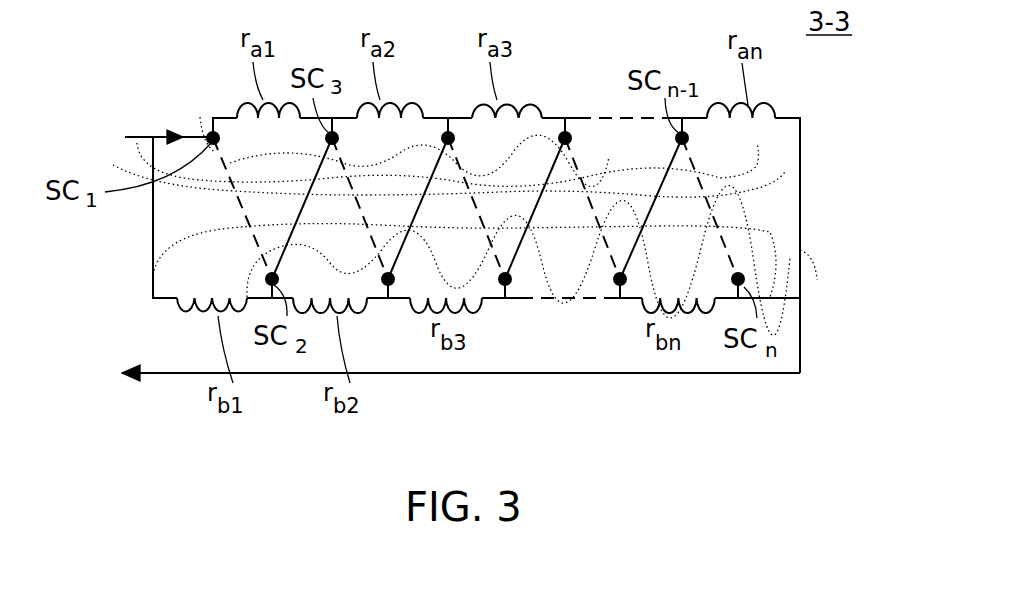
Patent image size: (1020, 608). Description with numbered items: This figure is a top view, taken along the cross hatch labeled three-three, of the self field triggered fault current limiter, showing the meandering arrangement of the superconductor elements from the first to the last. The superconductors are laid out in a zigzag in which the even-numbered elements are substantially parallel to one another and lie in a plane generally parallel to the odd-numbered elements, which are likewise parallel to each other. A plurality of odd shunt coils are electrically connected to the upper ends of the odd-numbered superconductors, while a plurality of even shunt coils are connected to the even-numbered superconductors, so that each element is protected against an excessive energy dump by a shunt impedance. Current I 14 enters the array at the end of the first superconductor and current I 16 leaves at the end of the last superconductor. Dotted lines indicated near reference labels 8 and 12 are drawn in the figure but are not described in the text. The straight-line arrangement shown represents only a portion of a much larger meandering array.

The input current I 14 is at (147, 137).
The output current I 16 is at (160, 374).
The superconducting coil winding 8 is at (650, 204).
The magnetic flux lines 12 is at (715, 228).